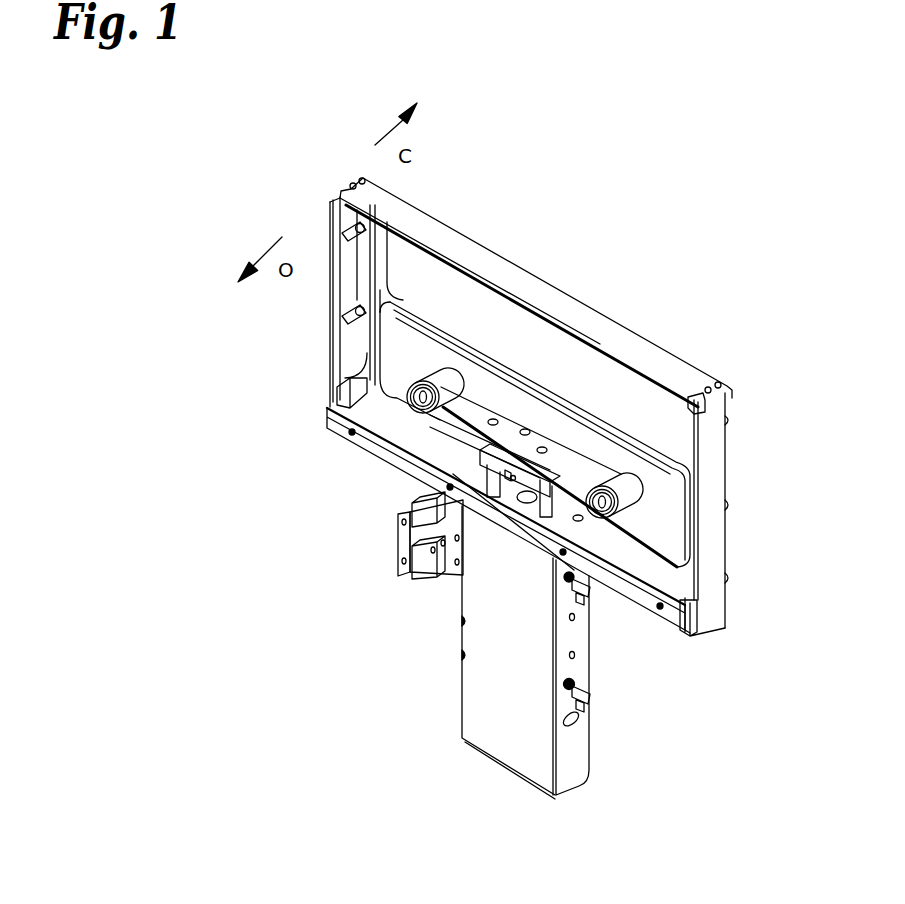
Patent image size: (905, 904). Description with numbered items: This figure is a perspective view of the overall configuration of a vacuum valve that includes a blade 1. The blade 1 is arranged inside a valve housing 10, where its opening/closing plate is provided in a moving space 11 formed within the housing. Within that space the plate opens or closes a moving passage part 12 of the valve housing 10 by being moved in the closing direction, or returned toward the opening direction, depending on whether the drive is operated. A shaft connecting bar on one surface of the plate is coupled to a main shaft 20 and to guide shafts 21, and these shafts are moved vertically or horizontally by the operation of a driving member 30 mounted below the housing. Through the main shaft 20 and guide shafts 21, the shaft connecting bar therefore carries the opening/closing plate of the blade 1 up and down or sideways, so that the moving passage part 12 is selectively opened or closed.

The blade 1 is at (541, 406).
The valve housing 10 is at (484, 265).
The moving space 11 is at (388, 415).
The moving passage part 12 is at (507, 330).
The main shaft 20 is at (453, 474).
The guide shafts 21 is at (556, 510).
The driving member 30 is at (540, 667).